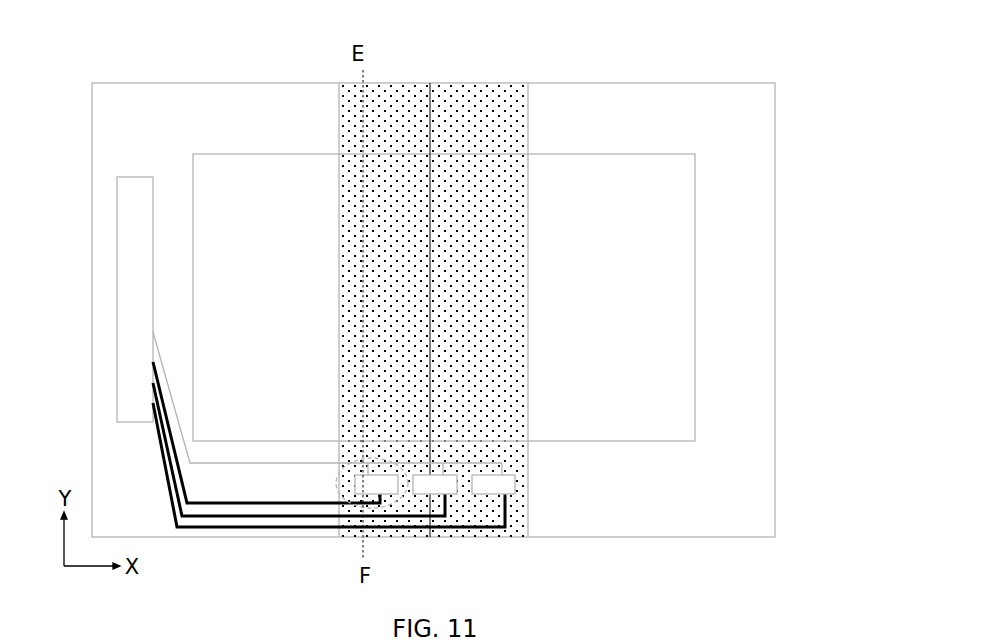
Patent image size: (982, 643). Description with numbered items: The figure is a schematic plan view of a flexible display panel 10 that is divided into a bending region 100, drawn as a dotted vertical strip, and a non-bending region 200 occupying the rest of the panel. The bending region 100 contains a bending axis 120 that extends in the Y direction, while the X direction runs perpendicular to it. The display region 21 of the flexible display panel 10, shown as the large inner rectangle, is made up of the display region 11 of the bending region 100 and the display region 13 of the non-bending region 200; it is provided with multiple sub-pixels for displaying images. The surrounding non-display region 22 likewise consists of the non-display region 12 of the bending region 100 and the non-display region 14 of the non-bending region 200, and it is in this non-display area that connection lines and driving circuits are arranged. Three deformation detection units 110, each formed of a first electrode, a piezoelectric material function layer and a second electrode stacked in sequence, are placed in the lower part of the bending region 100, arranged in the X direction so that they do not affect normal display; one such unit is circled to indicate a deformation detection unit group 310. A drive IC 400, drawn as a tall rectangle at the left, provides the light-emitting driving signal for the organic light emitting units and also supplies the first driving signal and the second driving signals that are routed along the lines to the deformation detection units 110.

The flexible display panel 10 is at (757, 43).
The non-bending region 200 is at (767, 178).
The bending region 100 is at (473, 90).
The deformation detection unit 110 is at (512, 482).
The bending axis 120 is at (430, 88).
The drive IC 400 is at (125, 322).
The deformation detection unit group 310 is at (365, 458).
The display region 21 is at (585, 160).
The non-display region 22 is at (518, 38).
The display region of the bending region 11 is at (517, 173).
The display region of the non-bending region 13 is at (546, 202).
The non-display region of the bending region 12 is at (512, 88).
The non-display region of the non-bending region 14 is at (570, 90).